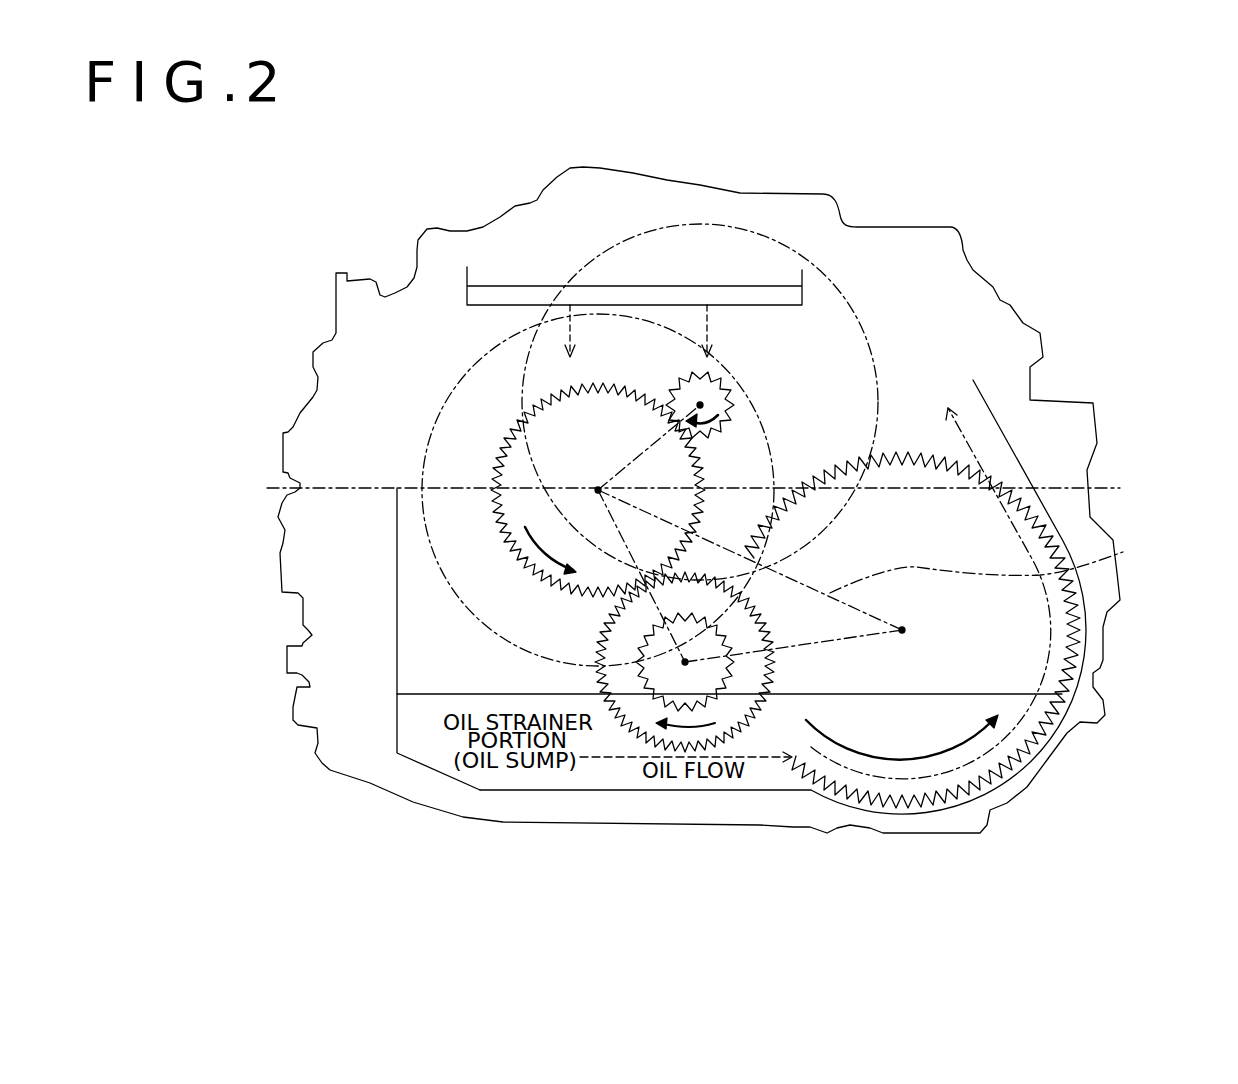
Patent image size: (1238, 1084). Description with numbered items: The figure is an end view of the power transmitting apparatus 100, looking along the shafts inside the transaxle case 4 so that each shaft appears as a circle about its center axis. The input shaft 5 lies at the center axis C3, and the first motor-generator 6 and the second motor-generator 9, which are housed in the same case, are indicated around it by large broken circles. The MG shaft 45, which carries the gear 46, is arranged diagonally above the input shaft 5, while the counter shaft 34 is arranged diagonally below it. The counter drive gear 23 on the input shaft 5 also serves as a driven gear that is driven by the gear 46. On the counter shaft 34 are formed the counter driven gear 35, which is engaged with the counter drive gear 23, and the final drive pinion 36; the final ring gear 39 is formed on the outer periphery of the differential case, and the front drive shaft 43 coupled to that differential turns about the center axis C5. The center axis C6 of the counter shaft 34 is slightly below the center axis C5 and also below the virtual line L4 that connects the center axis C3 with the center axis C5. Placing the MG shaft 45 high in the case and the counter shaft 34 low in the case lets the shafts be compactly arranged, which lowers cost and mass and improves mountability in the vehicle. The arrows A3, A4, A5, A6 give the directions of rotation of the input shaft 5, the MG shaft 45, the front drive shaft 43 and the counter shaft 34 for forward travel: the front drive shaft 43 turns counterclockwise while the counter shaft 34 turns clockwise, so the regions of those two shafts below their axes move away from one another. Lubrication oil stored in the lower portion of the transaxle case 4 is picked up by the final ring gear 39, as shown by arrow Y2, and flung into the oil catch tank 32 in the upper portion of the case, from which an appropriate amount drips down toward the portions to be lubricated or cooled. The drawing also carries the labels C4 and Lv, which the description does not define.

The power transmitting apparatus 100 is at (700, 133).
The transaxle case 4 is at (1003, 291).
The input shaft 5 is at (598, 490).
The first motor-generator 6 is at (473, 388).
The second motor-generator 9 is at (753, 247).
The counter drive gear 23 is at (600, 458).
The oil catch tank 32 is at (463, 275).
The counter shaft 34 is at (697, 685).
The counter driven gear 35 is at (607, 670).
The final drive pinion 36 is at (603, 623).
The final ring gear 39 is at (888, 810).
The front drive shaft 43 is at (948, 632).
The MG shaft 45 is at (718, 414).
The gear 46 is at (722, 441).
The arrow A3 is at (515, 544).
The arrow A4 is at (712, 437).
The arrow A5 is at (940, 757).
The arrow A6 is at (687, 730).
The center axis C3 is at (490, 485).
The axis C4 is at (730, 415).
The center axis C5 is at (902, 630).
The center axis C6 is at (685, 662).
The virtual line L4 is at (993, 567).
The oil level Lv is at (417, 693).
The arrow Y2 is at (963, 437).